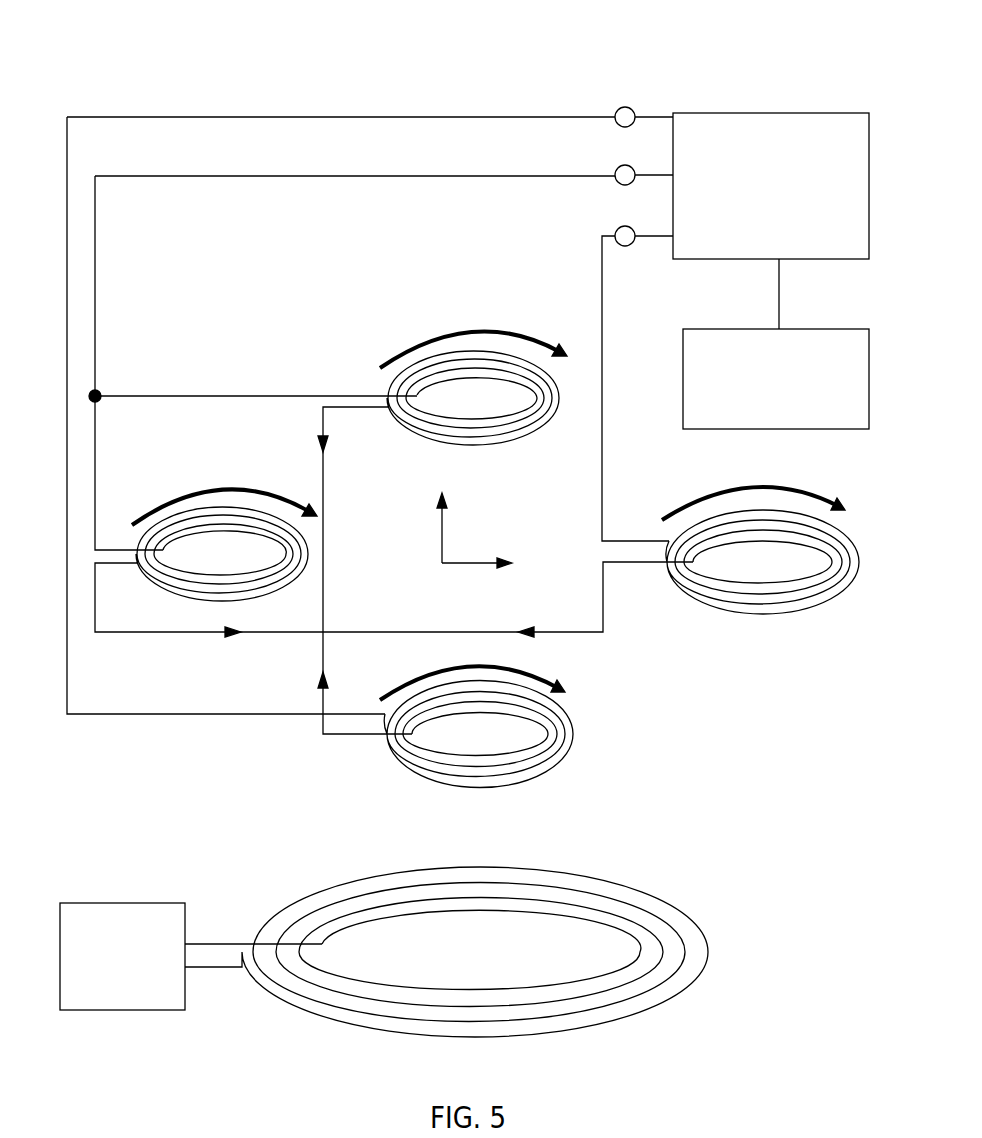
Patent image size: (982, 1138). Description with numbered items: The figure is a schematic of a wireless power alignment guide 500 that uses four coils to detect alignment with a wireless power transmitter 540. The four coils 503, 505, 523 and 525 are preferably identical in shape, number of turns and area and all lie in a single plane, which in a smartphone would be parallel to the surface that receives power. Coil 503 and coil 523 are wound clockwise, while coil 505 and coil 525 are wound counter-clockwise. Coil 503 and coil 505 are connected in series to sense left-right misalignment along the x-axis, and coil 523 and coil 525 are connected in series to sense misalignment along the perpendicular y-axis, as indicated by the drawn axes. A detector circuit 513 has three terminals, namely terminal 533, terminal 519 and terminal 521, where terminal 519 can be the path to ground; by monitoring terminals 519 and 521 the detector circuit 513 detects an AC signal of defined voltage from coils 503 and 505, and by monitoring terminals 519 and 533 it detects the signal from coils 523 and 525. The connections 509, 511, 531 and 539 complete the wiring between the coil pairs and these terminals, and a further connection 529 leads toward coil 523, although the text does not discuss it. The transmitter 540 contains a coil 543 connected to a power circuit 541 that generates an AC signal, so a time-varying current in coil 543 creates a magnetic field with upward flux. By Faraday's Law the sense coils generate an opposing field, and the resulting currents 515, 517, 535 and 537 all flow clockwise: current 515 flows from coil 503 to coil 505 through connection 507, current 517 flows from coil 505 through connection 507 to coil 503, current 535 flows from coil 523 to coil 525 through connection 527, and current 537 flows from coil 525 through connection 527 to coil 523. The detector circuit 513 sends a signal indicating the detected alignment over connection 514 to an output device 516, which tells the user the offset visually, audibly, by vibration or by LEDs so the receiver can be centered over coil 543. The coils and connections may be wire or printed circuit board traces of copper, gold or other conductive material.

The wireless power alignment guide 500 is at (343, 85).
The coil 503 is at (240, 600).
The coil 505 is at (785, 612).
The connection 507 is at (603, 605).
The connection 509 is at (95, 447).
The connection 511 is at (602, 355).
The detector circuit 513 is at (693, 260).
The connection 514 is at (779, 290).
The current 515 is at (233, 490).
The output device 516 is at (733, 329).
The current 517 is at (770, 488).
The terminal 519 is at (621, 166).
The terminal 521 is at (621, 227).
The coil 523 is at (495, 447).
The coil 525 is at (505, 787).
The connection 527 is at (323, 548).
The conductor 529 is at (218, 395).
The connection 531 is at (150, 713).
The terminal 533 is at (621, 108).
The current 535 is at (482, 335).
The current 537 is at (527, 680).
The connection 539 is at (270, 176).
The wireless power transmitter 540 is at (231, 907).
The power circuit 541 is at (155, 1010).
The coil 543 is at (700, 965).